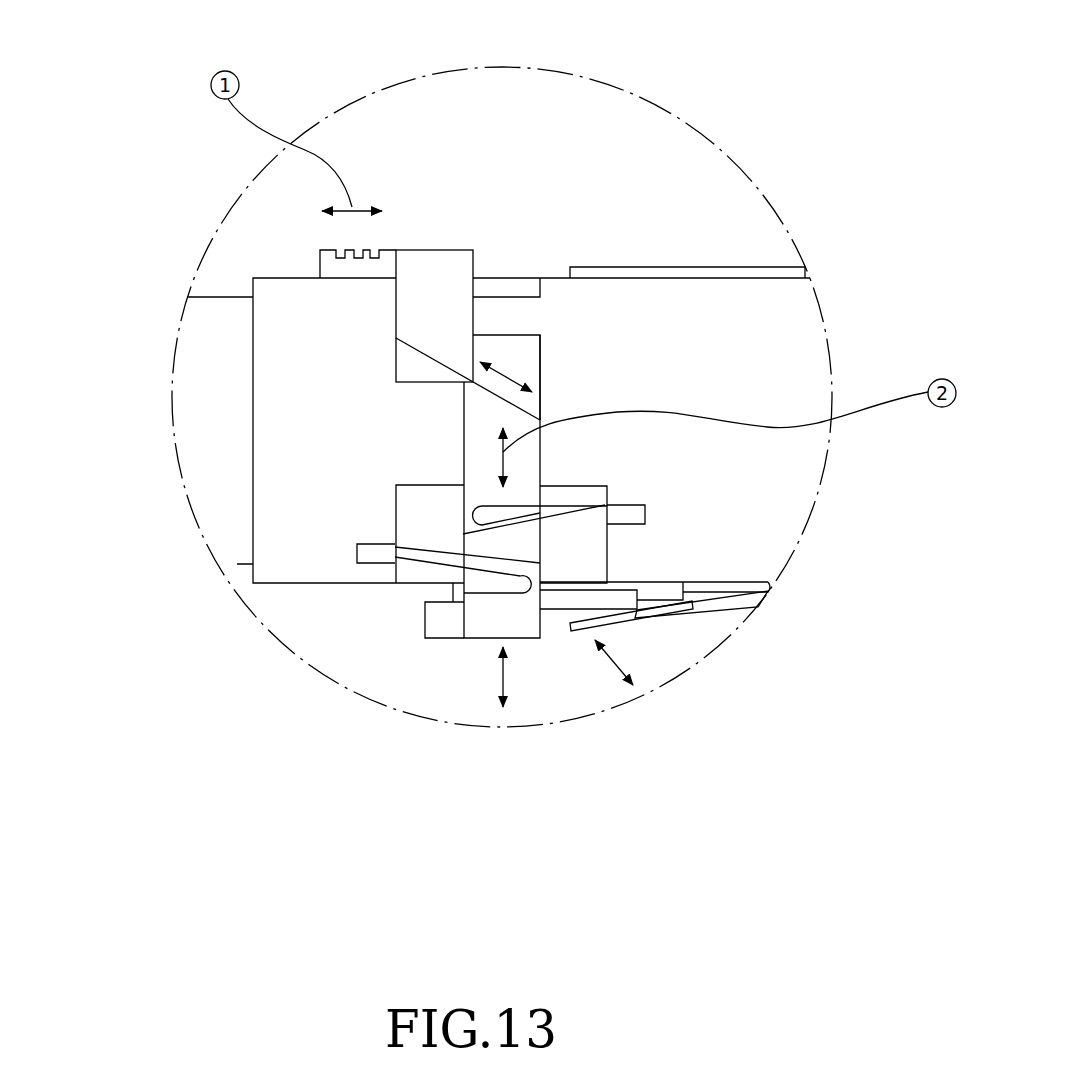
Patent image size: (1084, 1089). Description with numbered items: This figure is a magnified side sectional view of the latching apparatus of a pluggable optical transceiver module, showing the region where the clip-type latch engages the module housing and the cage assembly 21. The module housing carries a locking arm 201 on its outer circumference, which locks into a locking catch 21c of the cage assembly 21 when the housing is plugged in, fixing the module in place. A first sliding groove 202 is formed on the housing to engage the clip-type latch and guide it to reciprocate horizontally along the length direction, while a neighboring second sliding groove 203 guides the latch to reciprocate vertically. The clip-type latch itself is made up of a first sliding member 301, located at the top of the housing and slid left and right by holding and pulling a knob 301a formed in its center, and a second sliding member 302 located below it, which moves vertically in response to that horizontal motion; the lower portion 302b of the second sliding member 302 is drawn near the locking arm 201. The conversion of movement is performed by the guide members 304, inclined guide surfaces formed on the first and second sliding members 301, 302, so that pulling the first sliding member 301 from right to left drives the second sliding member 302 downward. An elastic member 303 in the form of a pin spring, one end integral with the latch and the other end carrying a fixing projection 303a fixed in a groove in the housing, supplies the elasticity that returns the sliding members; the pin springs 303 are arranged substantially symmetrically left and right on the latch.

The cage assembly 21 is at (690, 267).
The locking catch 21c is at (673, 612).
The locking arm 201 is at (663, 592).
The first sliding grooves 202 is at (513, 285).
The second sliding grooves 203 is at (520, 358).
The first sliding member 301 is at (437, 250).
The knob 301a is at (342, 248).
The second sliding member 302 is at (502, 398).
The lower end of shaft 302b is at (560, 607).
The elastic member 303 is at (567, 507).
The fixing projection 303a is at (637, 515).
The guide member 304 is at (465, 378).